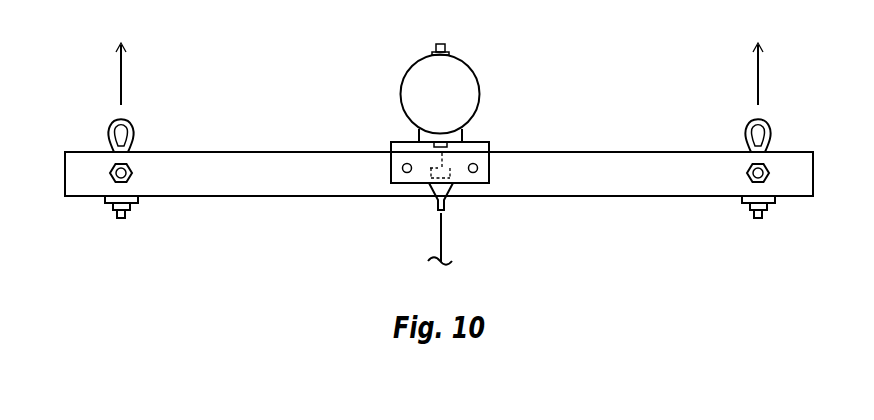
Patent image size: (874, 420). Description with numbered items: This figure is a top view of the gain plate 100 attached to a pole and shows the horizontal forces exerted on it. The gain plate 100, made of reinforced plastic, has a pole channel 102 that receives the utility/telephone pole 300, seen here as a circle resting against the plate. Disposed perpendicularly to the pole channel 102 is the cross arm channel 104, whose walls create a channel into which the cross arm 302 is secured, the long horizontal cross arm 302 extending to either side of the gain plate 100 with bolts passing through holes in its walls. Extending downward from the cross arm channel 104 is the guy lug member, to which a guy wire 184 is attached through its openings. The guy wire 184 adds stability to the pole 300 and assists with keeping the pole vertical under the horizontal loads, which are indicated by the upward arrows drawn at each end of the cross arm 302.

The gain plate 100 is at (459, 154).
The pole channel 102 is at (462, 133).
The cross arm channel 104 is at (489, 168).
The guy wire 184 is at (441, 220).
The utility/telephone pole 300 is at (480, 87).
The cross arm 302 is at (664, 152).